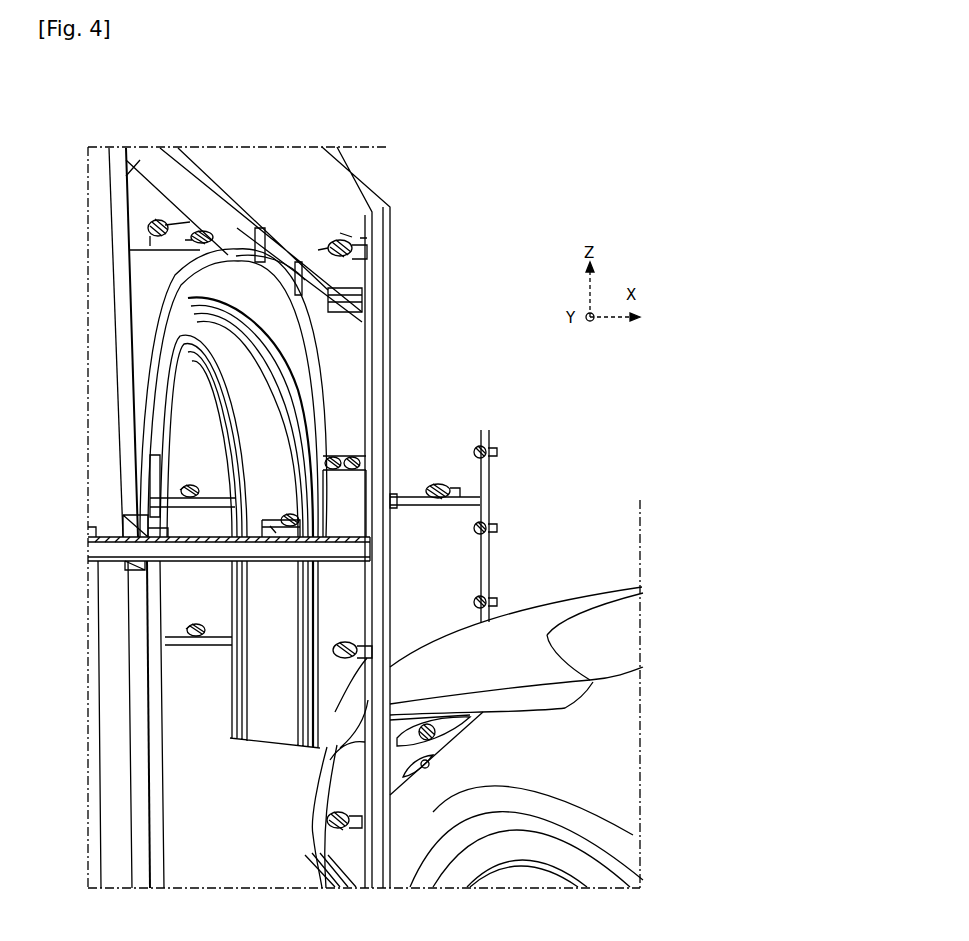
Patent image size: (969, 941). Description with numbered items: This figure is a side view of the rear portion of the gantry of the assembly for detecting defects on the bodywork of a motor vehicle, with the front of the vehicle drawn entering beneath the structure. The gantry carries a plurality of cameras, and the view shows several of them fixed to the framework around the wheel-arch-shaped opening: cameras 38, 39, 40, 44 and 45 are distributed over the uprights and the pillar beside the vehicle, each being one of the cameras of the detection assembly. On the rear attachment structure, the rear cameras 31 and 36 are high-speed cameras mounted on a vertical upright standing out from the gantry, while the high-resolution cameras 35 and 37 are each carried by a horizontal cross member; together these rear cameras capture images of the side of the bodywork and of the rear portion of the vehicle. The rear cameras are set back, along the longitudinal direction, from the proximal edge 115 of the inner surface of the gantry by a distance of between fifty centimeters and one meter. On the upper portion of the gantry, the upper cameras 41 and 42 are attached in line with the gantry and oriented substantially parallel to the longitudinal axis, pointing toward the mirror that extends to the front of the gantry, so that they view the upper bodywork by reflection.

The proximal edge 115 is at (235, 252).
The rear camera 31 is at (493, 604).
The high-resolution camera 35 is at (441, 483).
The rear camera 36 is at (493, 530).
The high-resolution camera 37 is at (290, 512).
The camera 38 is at (328, 822).
The camera 39 is at (340, 498).
The camera 40 is at (345, 240).
The upper camera 41 is at (158, 218).
The upper camera 42 is at (202, 230).
The camera 44 is at (493, 448).
The camera 45 is at (313, 645).